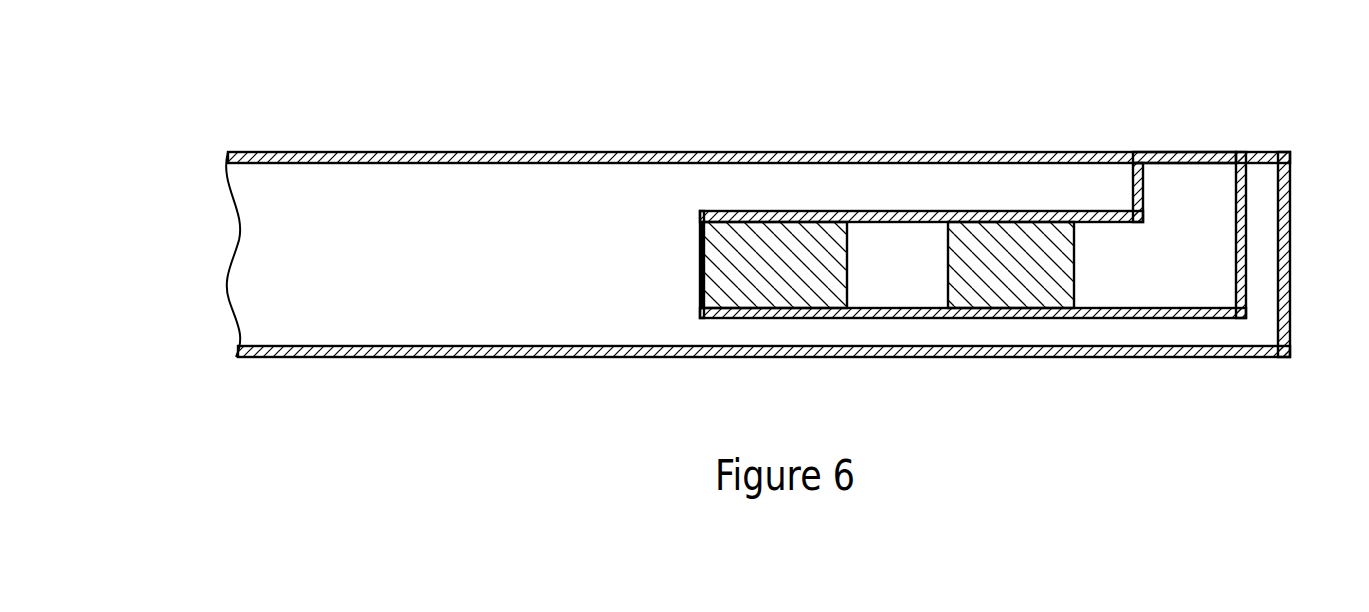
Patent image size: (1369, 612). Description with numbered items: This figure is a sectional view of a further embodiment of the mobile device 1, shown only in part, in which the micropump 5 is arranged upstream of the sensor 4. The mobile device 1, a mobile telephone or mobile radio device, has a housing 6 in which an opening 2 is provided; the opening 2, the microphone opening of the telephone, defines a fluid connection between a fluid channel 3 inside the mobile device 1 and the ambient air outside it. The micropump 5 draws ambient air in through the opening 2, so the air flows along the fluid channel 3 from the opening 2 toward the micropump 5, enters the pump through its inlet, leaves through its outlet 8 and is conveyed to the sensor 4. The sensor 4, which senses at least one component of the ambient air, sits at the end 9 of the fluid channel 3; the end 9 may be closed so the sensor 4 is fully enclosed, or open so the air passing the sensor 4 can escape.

The mobile device 1 is at (726, 194).
The opening 2 is at (1019, 192).
The fluid channel 3 is at (1243, 243).
The sensor 4 is at (775, 295).
The micropump 5 is at (1012, 293).
The housing 6 is at (617, 152).
The outlet 8 is at (948, 243).
The end 9 is at (702, 262).